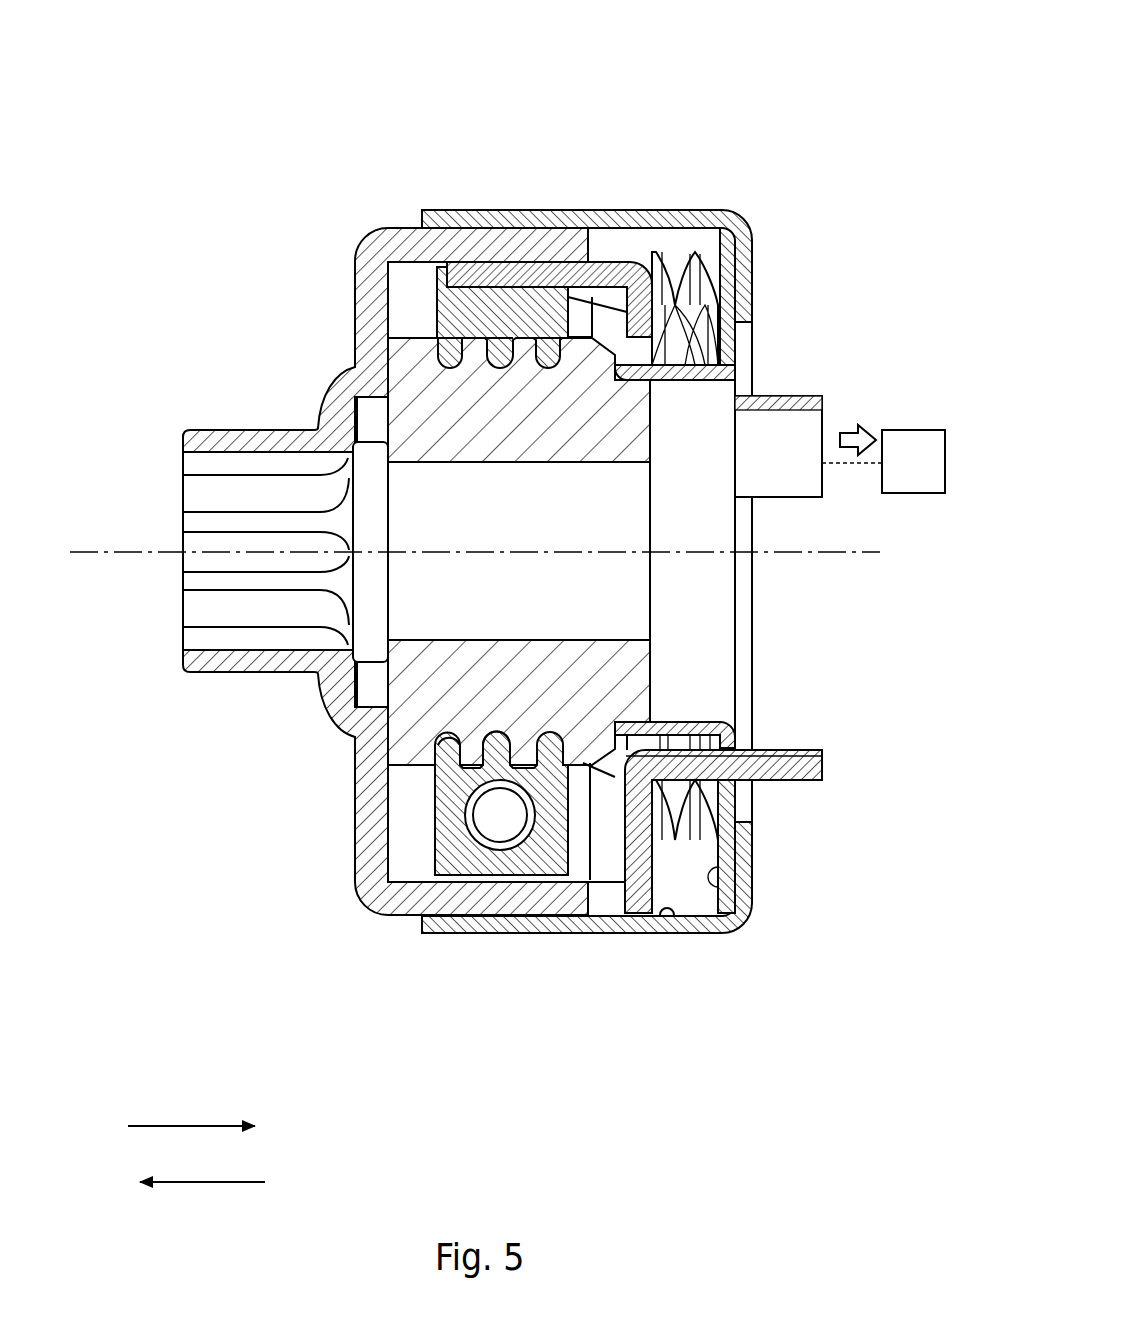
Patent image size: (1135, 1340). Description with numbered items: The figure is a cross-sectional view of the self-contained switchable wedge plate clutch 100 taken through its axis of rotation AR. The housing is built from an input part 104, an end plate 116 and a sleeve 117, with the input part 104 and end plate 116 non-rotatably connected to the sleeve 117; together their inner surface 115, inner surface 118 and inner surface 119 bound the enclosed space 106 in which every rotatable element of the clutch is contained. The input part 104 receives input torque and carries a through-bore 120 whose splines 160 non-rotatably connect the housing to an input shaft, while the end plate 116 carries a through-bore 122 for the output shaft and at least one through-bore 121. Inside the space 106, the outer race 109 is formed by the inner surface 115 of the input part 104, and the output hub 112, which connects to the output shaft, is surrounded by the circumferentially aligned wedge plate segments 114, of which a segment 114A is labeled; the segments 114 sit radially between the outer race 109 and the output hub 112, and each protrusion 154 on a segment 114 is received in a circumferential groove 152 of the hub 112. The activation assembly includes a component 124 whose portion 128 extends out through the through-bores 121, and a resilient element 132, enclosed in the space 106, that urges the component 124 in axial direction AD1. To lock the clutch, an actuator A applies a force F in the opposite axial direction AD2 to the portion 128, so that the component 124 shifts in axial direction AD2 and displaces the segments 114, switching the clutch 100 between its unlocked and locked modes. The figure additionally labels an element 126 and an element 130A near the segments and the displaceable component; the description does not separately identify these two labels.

The switchable wedge plate clutch 100 is at (646, 60).
The input part 104 is at (263, 427).
The space 106 is at (630, 240).
The outer race 109 is at (480, 300).
The output hub 112 is at (378, 368).
The circumferentially aligned wedge plate segments 114 is at (483, 868).
The wedge plate segment 114A is at (487, 267).
The inner surface of input part 115 is at (383, 296).
The end plate 116 is at (742, 343).
The sleeve 117 is at (510, 205).
The inner surface of end plate 118 is at (733, 883).
The inner surface of sleeve 119 is at (660, 917).
The through-bore 120 is at (192, 458).
The through-bore 121 is at (733, 745).
The through-bore 122 is at (698, 392).
The component 124 is at (560, 250).
The bolt hole 126 is at (510, 848).
The portion 128 is at (787, 430).
The bushing 130A is at (462, 275).
The resilient element 132 is at (695, 252).
The circumferential groove 152 is at (477, 772).
The protrusion 154 is at (465, 745).
The splines 160 is at (193, 605).
The axis of rotation AR is at (126, 555).
The axial direction AD1 is at (195, 1182).
The axial direction AD2 is at (172, 1126).
The force F is at (843, 437).
The actuator A is at (883, 461).